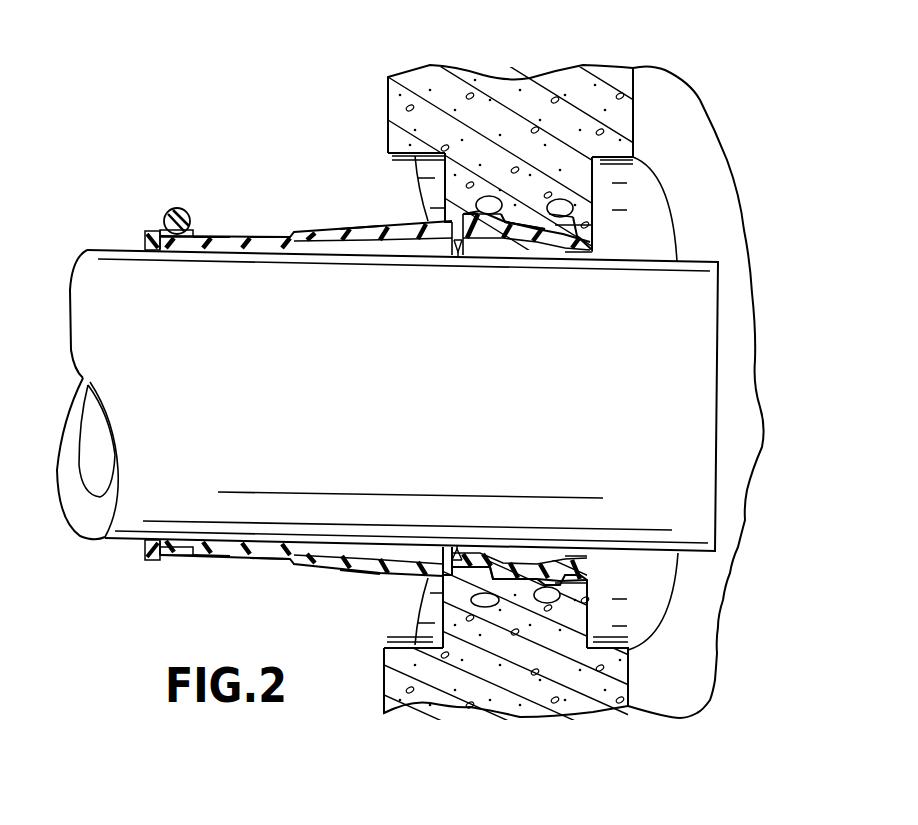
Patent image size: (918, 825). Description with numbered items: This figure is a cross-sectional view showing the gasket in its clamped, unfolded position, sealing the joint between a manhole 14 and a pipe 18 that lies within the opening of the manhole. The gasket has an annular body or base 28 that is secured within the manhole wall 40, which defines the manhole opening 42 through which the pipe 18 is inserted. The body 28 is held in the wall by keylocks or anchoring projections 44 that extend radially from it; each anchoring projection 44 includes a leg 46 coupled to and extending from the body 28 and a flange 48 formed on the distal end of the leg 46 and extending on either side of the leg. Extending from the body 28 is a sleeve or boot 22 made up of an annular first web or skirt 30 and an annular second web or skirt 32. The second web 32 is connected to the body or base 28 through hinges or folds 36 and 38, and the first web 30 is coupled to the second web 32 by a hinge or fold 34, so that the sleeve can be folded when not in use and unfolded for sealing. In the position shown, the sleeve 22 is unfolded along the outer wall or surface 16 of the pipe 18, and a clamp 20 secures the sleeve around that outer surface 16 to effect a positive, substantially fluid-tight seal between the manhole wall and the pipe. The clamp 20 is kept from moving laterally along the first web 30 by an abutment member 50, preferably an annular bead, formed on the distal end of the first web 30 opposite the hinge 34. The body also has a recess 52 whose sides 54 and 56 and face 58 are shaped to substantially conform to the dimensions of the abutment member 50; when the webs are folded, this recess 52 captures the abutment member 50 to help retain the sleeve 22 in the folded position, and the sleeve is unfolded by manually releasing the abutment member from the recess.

The manhole 14 is at (396, 103).
The outer wall or surface of pipe 16 is at (116, 272).
The pipe 18 is at (68, 458).
The clamp 20 is at (176, 208).
The sleeve or boot 22 is at (305, 222).
The annular body or base 28 is at (525, 224).
The first web or skirt 30 is at (226, 236).
The second web or skirt 32 is at (362, 229).
The hinge or fold 34 is at (289, 235).
The hinge or fold 36 is at (425, 222).
The hinge or fold 38 is at (452, 220).
The manhole wall 40 is at (588, 227).
The manhole opening 42 is at (575, 254).
The keylock or anchoring projection 44 is at (490, 232).
The leg 46 is at (493, 190).
The flange 48 is at (528, 222).
The abutment member 50 is at (143, 230).
The recess 52 is at (458, 257).
The side of recess 54 is at (460, 233).
The side of recess 56 is at (464, 236).
The face of recess 58 is at (465, 215).